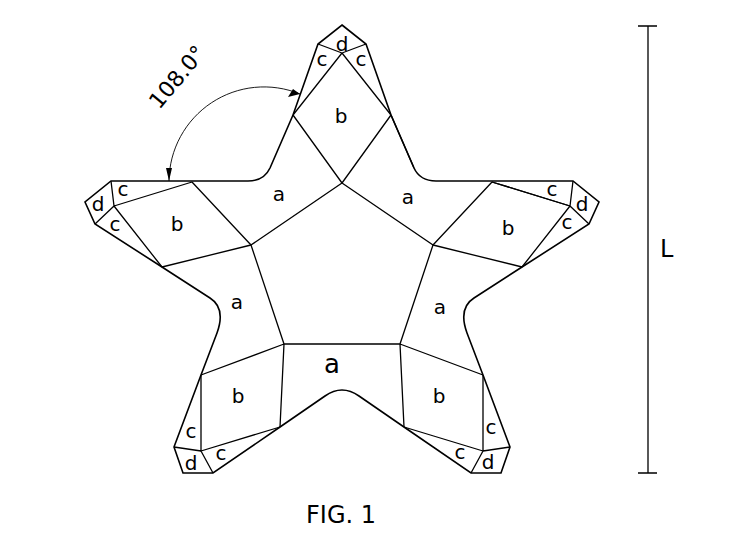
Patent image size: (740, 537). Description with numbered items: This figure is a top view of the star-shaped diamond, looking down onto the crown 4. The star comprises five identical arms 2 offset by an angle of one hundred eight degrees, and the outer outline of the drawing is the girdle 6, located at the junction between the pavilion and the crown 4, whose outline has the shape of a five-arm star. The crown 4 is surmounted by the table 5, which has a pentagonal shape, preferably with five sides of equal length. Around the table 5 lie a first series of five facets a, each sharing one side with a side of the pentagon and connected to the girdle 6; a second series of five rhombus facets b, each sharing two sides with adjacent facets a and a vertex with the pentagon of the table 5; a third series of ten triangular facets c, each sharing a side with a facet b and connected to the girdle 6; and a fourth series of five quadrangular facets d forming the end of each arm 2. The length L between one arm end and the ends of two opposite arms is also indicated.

The arm 2 is at (405, 127).
The crown 4 is at (105, 69).
The table 5 is at (355, 317).
The girdle 6 is at (494, 180).